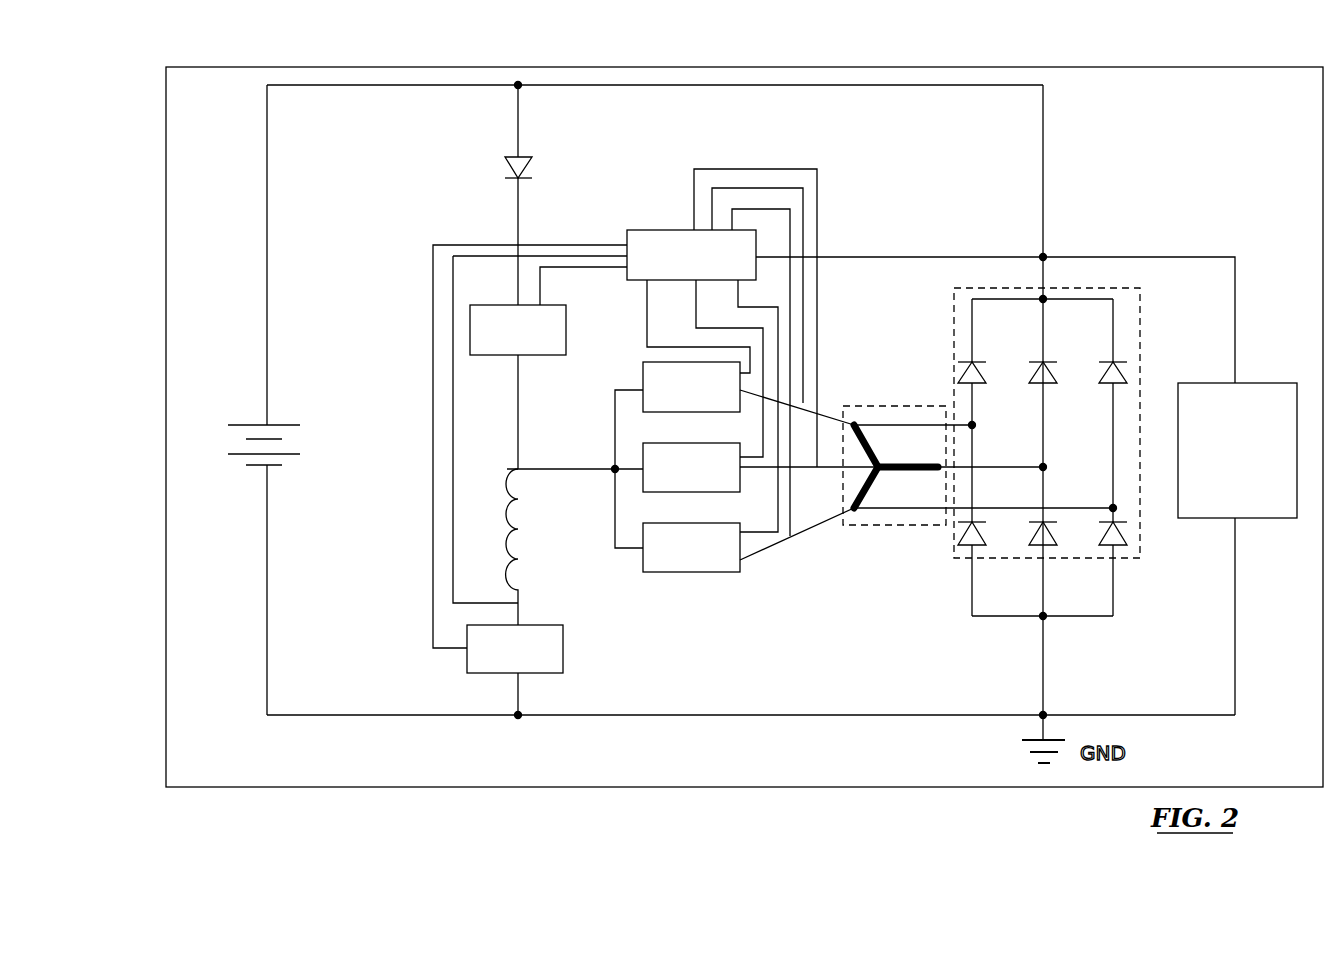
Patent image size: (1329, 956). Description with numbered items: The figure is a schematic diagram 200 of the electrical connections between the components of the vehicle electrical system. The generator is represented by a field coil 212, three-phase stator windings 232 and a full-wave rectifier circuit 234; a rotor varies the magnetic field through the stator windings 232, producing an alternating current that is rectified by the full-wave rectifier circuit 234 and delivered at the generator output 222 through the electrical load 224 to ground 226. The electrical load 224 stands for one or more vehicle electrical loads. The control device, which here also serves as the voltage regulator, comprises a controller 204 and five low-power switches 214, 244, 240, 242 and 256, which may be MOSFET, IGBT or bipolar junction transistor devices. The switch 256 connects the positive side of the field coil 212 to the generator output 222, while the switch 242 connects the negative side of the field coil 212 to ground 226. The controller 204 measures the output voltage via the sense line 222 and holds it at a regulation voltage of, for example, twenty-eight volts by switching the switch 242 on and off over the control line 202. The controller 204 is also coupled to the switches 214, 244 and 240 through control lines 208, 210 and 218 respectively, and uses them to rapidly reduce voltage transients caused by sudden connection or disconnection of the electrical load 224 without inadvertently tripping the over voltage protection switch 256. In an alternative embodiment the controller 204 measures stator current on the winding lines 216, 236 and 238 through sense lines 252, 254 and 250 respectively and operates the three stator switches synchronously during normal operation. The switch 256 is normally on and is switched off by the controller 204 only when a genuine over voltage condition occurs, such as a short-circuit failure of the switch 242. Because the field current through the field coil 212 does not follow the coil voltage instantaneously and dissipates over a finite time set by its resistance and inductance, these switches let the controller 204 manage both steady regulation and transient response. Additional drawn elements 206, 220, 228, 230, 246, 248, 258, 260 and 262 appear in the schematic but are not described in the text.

The schematic diagram 200 is at (158, 128).
The control line 202 is at (452, 243).
The controller 204 is at (655, 230).
The field coil positive terminal wire 206 is at (557, 469).
The control line 208 is at (646, 307).
The control line 210 is at (698, 305).
The field coil 212 is at (510, 589).
The switch 214 is at (643, 370).
The line 216 is at (810, 410).
The control line 218 is at (780, 320).
The output wire 220 is at (1043, 167).
The output 222 is at (1117, 257).
The electrical load 224 is at (1248, 383).
The ground 226 is at (1235, 615).
The rectifier diode 228 is at (975, 545).
The rectifier node 230 is at (975, 385).
The three-phase stator windings 232 is at (875, 523).
The full-wave rectifier circuit 234 is at (955, 328).
The line 236 is at (803, 468).
The line 238 is at (800, 535).
The switch 240 is at (678, 573).
The switch 242 is at (467, 660).
The switch 244 is at (643, 445).
The battery 246 is at (282, 425).
The field supply wire 248 is at (450, 338).
The sense line 250 is at (727, 168).
The sense line 252 is at (760, 188).
The sense line 254 is at (782, 209).
The switch 256 is at (498, 357).
The diode 258 is at (532, 153).
The control line 260 is at (520, 228).
The control line 262 is at (555, 265).